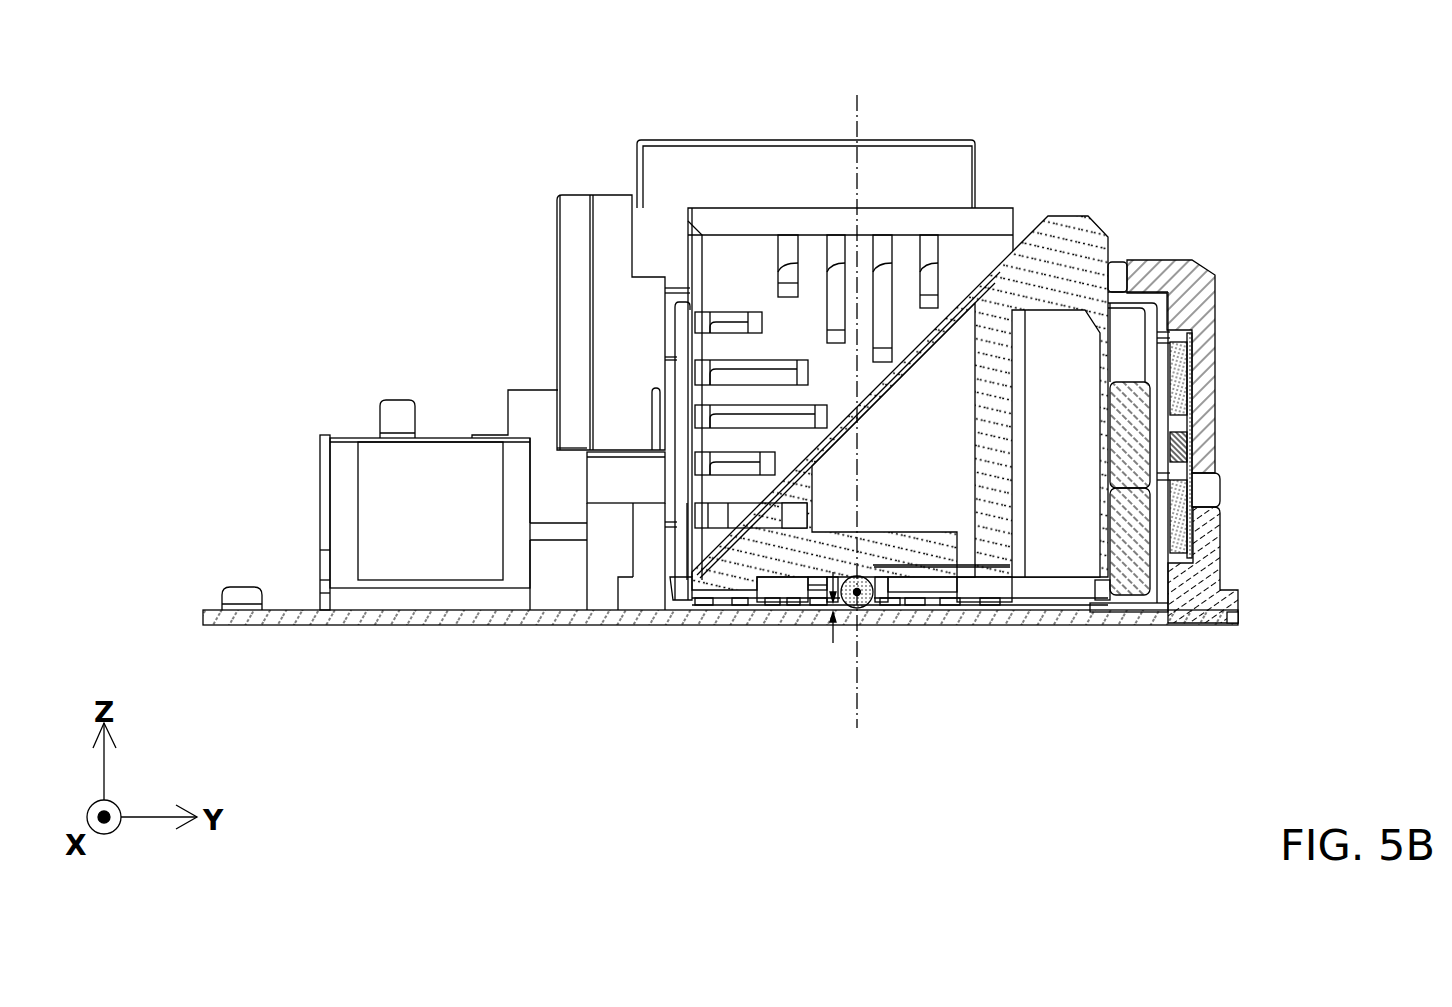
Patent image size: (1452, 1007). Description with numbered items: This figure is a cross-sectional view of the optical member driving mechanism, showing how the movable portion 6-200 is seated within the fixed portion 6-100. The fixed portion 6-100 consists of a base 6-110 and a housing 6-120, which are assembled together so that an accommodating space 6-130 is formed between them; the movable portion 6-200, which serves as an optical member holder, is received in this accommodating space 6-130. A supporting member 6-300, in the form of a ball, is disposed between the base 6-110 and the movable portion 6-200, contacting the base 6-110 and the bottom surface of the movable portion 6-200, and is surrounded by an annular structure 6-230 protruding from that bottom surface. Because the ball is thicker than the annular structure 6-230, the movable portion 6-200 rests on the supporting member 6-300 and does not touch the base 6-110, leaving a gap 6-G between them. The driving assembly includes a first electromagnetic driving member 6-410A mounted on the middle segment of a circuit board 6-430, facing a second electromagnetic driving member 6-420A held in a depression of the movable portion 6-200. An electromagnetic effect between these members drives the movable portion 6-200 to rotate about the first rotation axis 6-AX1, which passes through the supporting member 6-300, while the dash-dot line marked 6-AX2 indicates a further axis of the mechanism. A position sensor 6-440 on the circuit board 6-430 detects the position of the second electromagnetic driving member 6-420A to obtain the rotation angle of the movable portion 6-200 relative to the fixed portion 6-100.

The fixed portion 6-100 is at (1273, 441).
The base 6-110 is at (1200, 534).
The housing 6-120 is at (1205, 452).
The accommodating space 6-130 is at (1127, 340).
The movable portion 6-200 is at (1072, 240).
The annular structure 6-230 is at (870, 603).
The supporting member 6-300 is at (965, 566).
The first electromagnetic driving member 6-410A is at (1180, 360).
The second electromagnetic driving member 6-420A is at (1130, 565).
The circuit board 6-430 is at (1190, 380).
The position sensor 6-440 is at (1190, 440).
The gap 6-G is at (833, 643).
The first rotation axis 6-AX1 is at (857, 592).
The optical axis 6-AX2 is at (847, 385).